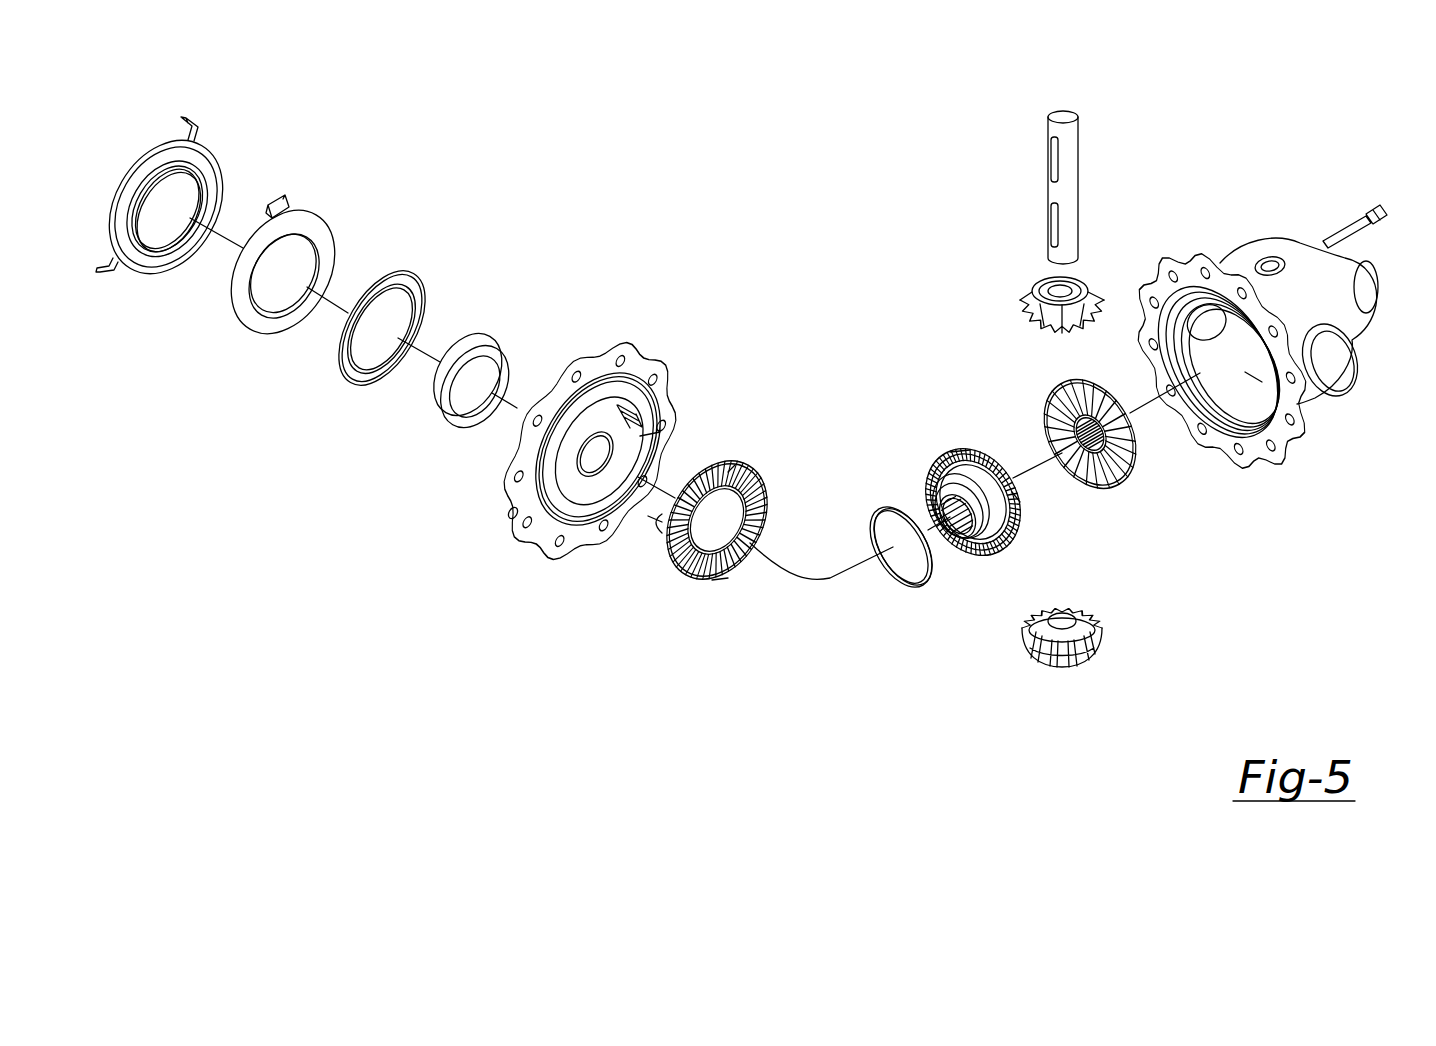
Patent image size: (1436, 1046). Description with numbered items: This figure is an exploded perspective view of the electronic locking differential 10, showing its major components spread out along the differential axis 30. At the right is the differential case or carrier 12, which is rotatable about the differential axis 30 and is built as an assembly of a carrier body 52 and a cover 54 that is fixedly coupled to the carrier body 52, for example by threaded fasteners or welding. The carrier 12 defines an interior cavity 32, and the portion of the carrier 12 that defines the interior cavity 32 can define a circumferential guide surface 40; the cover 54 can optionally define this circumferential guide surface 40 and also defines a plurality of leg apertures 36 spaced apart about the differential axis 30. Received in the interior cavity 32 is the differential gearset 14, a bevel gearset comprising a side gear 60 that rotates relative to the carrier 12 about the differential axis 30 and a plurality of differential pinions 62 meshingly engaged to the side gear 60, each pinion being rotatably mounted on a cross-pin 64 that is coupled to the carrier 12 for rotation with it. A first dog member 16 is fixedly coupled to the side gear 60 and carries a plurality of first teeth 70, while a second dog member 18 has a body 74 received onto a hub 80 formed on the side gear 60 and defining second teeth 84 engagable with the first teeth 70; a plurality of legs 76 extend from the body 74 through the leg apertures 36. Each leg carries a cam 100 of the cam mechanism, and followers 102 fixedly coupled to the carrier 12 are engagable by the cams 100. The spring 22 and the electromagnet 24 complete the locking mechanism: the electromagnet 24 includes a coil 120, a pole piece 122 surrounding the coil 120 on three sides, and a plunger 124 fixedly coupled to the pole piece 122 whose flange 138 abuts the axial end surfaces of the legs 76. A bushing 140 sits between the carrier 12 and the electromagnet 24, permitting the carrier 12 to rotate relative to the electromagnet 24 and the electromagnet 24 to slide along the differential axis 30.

The electronic locking differential 10 is at (100, 440).
The differential case or carrier 12 is at (1230, 262).
The differential gearset 14 is at (860, 500).
The first dog member 16 is at (978, 557).
The second dog member 18 is at (673, 577).
The spring 22 is at (888, 577).
The electromagnet 24 is at (472, 262).
The differential axis 30 is at (830, 578).
The interior cavity 32 is at (1257, 372).
The leg apertures 36 is at (582, 532).
The circumferential guide surface 40 is at (640, 420).
The carrier body 52 is at (1312, 318).
The cover 54 is at (513, 513).
The side gear 60 is at (1020, 490).
The differential pinions 62 is at (1085, 283).
The cross-pin 64 is at (1070, 157).
The first teeth 70 is at (967, 453).
The body 74 is at (730, 468).
The legs 76 is at (655, 532).
The hub 80 is at (1017, 497).
The second teeth 84 is at (725, 583).
The cams 100 is at (655, 518).
The followers 102 is at (640, 432).
The coil 120 is at (272, 334).
The pole piece 122 is at (177, 277).
The plunger 124 is at (338, 390).
The flange 138 is at (375, 378).
The bushing 140 is at (478, 343).